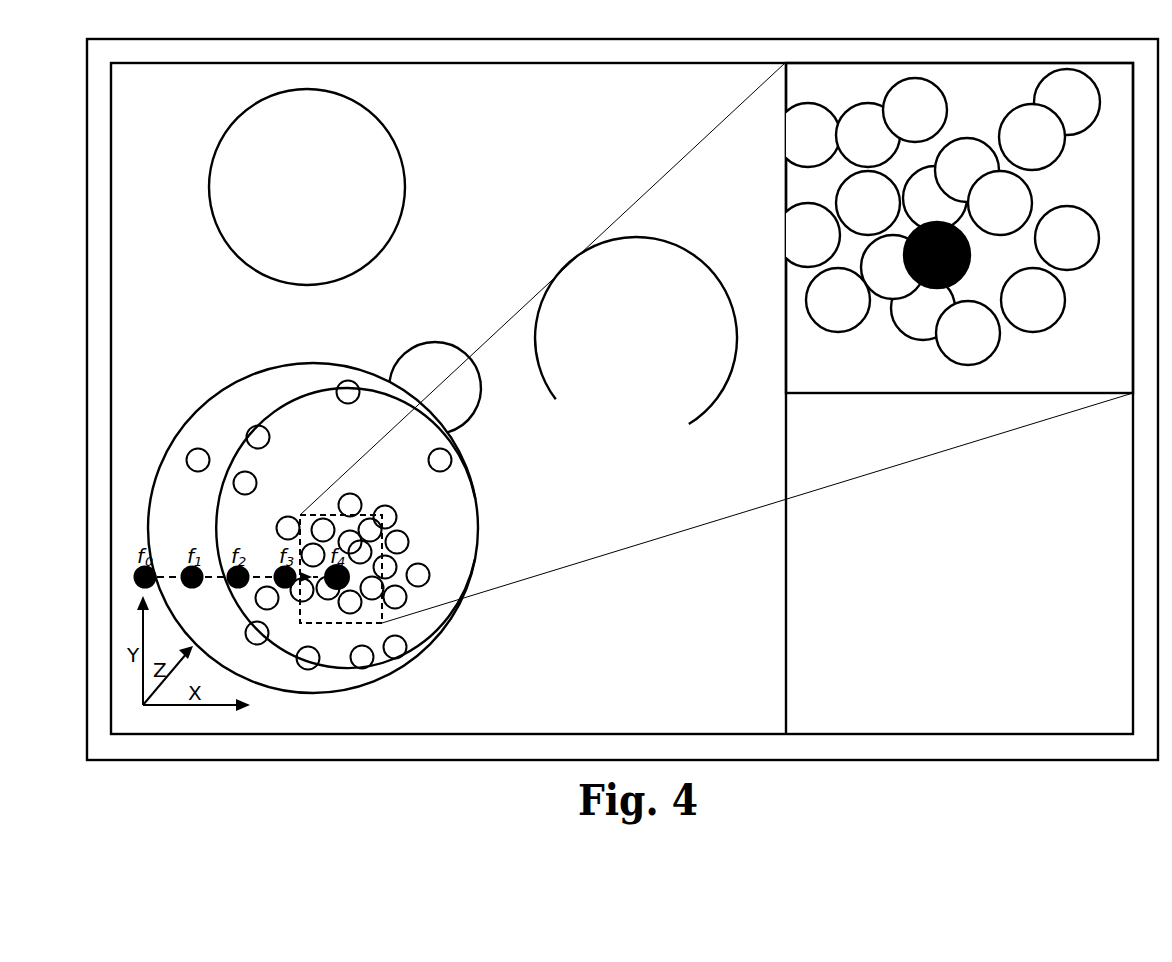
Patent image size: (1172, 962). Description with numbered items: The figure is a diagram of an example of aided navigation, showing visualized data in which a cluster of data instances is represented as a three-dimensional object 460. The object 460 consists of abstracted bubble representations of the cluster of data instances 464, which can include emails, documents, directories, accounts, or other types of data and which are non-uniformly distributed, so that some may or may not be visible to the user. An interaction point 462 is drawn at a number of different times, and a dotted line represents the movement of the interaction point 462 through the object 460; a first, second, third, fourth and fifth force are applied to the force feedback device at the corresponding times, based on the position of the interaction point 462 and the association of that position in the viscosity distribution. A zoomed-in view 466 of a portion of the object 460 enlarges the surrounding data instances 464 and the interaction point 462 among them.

The object 460 is at (197, 413).
The interaction point 462 is at (346, 590).
The data instances 464 is at (970, 398).
The zoomed-in view 466 is at (1107, 62).